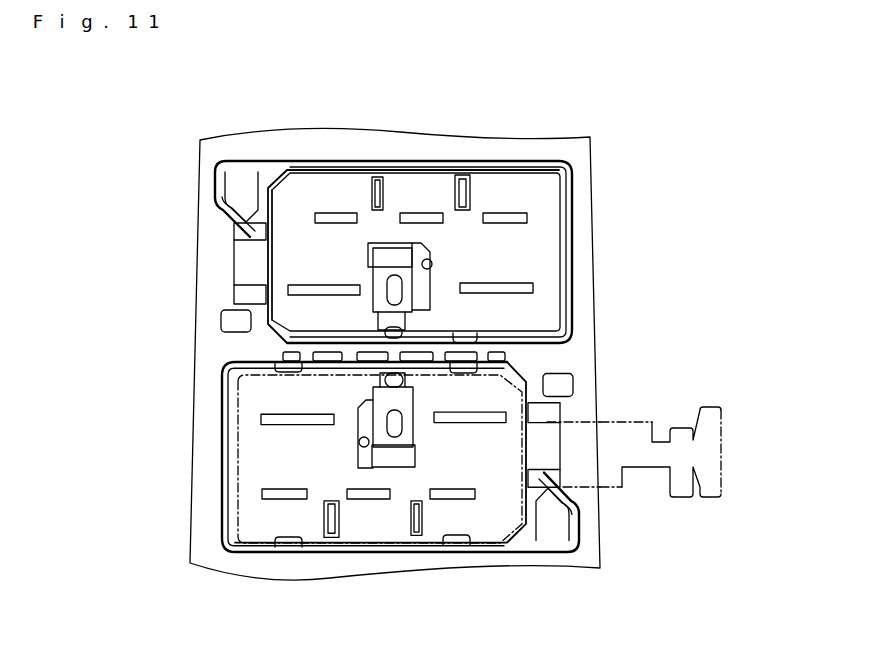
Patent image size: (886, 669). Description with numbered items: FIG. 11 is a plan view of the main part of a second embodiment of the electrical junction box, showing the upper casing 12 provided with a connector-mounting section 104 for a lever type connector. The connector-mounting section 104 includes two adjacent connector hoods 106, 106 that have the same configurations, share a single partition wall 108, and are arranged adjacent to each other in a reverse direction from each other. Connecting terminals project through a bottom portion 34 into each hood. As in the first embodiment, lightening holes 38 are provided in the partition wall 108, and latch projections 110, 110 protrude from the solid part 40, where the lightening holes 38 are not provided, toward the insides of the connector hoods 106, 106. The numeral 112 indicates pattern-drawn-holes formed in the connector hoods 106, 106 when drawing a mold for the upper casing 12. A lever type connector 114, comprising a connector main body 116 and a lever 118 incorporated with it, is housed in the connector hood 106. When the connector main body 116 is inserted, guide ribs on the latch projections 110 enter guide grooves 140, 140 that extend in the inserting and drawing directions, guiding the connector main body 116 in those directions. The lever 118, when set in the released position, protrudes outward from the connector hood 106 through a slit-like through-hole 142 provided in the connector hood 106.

The upper casing 12 is at (290, 140).
The bottom portion 34 is at (345, 192).
The lightening holes 38 is at (330, 354).
The solid part 40 is at (290, 370).
The connector-mounting section 104 is at (572, 120).
The connector hood 106 is at (566, 196).
The partition wall 108 is at (330, 332).
The latch projections 110 is at (400, 258).
The pattern-drawn-holes 112 is at (425, 270).
The lever type connector 114 is at (668, 398).
The connector main body 116 is at (262, 520).
The lever 118 is at (715, 446).
The guide grooves 140 is at (388, 322).
The through-hole 142 is at (240, 252).